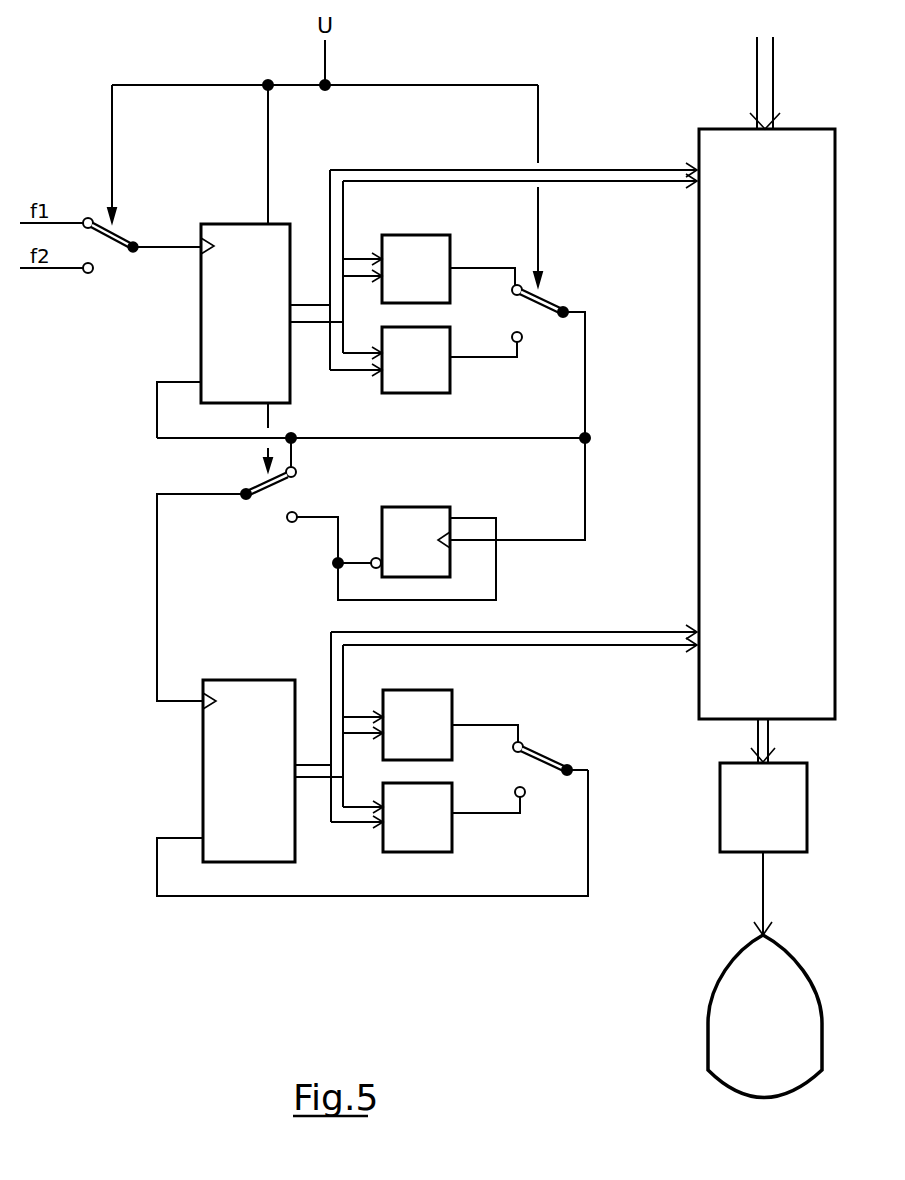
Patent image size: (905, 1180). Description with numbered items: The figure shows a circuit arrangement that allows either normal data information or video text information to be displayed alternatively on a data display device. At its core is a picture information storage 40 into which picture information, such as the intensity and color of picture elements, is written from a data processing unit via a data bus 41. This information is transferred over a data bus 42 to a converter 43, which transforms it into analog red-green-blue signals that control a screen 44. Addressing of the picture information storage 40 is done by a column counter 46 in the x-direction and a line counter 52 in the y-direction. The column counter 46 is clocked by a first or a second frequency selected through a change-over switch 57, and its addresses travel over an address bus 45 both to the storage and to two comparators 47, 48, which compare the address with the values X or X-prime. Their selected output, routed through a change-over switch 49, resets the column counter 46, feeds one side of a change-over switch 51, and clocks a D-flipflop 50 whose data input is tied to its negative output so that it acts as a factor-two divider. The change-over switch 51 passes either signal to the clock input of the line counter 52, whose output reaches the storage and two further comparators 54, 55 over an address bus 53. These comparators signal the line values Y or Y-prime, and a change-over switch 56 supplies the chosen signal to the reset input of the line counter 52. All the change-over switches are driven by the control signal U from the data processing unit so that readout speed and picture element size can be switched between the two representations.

The picture information storage 40 is at (699, 297).
The data bus 41 is at (757, 70).
The data bus 42 is at (758, 739).
The converter 43 is at (720, 836).
The screen 44 is at (712, 1036).
The address bus 45 is at (605, 183).
The column counter 46 is at (228, 233).
The comparator 47 is at (414, 242).
The comparator 48 is at (452, 395).
The change-over switch 49 is at (548, 303).
The D-flipflop 50 is at (409, 514).
The change-over switch 51 is at (258, 500).
The line counter 52 is at (248, 679).
The address bus 53 is at (582, 648).
The comparator 54 is at (406, 696).
The comparator 55 is at (398, 850).
The change-over switch 56 is at (548, 758).
The change-over switch 57 is at (120, 232).